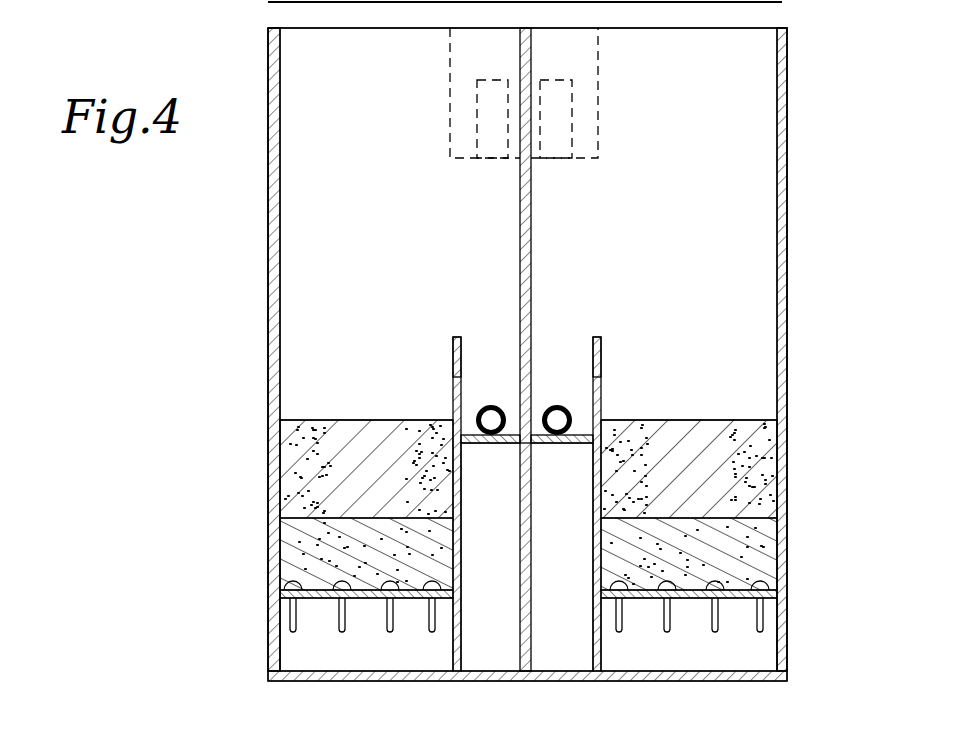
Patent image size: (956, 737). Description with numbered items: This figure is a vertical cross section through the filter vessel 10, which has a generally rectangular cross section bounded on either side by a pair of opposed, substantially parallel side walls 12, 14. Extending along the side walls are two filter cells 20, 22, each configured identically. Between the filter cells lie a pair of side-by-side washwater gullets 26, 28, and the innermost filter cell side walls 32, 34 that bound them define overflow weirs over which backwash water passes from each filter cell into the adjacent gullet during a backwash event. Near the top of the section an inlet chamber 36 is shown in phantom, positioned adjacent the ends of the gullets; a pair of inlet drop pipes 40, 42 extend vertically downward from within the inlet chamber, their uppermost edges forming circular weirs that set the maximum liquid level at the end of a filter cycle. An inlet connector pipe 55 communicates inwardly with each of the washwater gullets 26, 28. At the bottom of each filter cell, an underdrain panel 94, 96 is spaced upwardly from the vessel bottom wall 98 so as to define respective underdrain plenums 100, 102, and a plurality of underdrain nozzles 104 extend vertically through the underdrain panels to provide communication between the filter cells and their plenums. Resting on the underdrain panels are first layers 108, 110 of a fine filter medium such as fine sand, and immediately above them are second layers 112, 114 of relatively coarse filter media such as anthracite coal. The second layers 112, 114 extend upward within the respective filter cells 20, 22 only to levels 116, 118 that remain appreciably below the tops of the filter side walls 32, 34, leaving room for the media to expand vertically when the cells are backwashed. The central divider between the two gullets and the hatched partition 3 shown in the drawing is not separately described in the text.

The filter vessel 10 is at (228, 226).
The side wall 12 is at (780, 152).
The side wall 14 is at (268, 155).
The filter cell 20 is at (750, 72).
The filter cell 22 is at (292, 63).
The central partition wall 3 is at (531, 228).
The inlet chamber 36 is at (598, 80).
The inlet drop pipe 40 is at (572, 118).
The inlet drop pipe 42 is at (477, 118).
The washwater gullet 26 is at (578, 372).
The washwater gullet 28 is at (465, 375).
The filter cell side wall 32 is at (601, 337).
The filter cell side wall 34 is at (455, 337).
The inlet connector pipe 55 is at (491, 405).
The second layer 114 is at (300, 474).
The level 118 is at (343, 420).
The second layer 112 is at (765, 462).
The level 116 is at (672, 420).
The first layer 110 is at (292, 548).
The first layer 108 is at (762, 548).
The underdrain nozzle 104 is at (284, 613).
The underdrain panel 96 is at (322, 600).
The underdrain panel 94 is at (693, 600).
The underdrain plenum 102 is at (362, 660).
The underdrain plenum 100 is at (645, 660).
The vessel bottom wall 98 is at (512, 681).